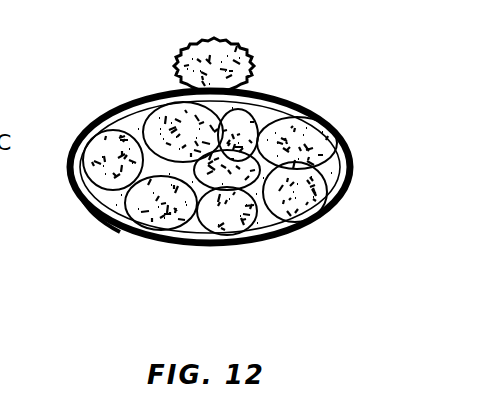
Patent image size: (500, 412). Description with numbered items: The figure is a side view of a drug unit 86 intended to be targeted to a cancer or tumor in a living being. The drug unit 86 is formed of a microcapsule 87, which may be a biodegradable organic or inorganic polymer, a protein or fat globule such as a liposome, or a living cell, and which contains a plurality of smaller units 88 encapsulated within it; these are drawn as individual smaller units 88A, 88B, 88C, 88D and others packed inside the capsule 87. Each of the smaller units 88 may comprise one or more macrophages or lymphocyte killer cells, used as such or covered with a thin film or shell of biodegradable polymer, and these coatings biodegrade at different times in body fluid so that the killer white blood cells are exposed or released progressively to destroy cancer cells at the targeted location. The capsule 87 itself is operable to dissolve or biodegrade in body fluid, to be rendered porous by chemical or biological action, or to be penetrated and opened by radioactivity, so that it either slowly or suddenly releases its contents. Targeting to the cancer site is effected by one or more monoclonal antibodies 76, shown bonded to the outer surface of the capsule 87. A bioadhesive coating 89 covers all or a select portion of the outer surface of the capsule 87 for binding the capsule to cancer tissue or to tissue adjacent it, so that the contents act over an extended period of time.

The monoclonal antibody 76 is at (250, 53).
The drug unit 86 is at (141, 89).
The microcapsule 87 is at (288, 102).
The smaller units 88 is at (317, 150).
The smaller unit 88A is at (315, 190).
The smaller unit 88B is at (255, 238).
The smaller unit 88C is at (163, 241).
The smaller unit 88D is at (82, 180).
The bioadhesive coating 89 is at (93, 213).